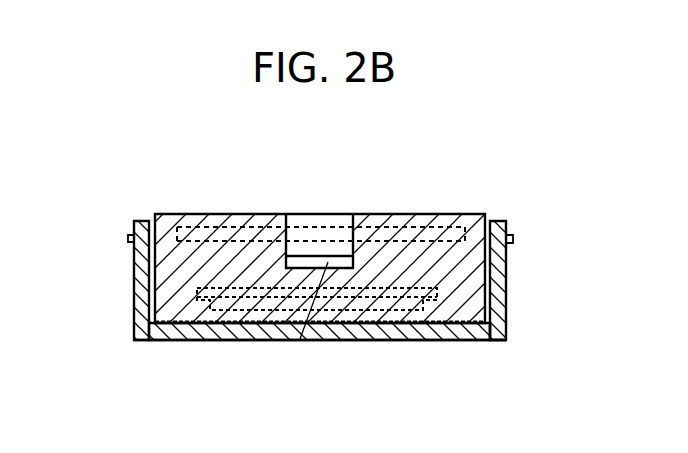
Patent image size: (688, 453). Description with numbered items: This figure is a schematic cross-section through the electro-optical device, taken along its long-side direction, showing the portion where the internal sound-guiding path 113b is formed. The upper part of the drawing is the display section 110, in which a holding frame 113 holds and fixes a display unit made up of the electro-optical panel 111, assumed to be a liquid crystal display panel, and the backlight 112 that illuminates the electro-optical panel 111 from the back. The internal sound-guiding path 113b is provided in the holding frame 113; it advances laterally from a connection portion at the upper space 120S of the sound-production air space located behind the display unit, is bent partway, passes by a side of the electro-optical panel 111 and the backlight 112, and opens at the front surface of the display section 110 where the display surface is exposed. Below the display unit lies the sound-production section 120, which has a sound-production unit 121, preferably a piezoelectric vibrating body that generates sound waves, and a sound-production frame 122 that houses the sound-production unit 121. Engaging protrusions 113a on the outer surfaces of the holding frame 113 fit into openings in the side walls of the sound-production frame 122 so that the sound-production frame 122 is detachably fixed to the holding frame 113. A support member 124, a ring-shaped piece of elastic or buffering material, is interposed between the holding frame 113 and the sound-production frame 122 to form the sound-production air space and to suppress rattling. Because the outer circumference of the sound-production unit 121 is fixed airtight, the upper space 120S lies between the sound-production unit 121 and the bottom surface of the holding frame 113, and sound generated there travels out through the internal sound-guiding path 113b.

The display section 110 is at (442, 201).
The electro-optical panel 111 is at (255, 212).
The backlight 112 is at (372, 214).
The holding frame 113 is at (167, 212).
The engaging protrusion 113a is at (128, 238).
The internal sound-guiding path 113b is at (322, 232).
The sound-production section 120 is at (382, 345).
The upper space 120S is at (300, 340).
The sound-production unit 121 is at (160, 302).
The sound-production frame 122 is at (497, 339).
The support member 124 is at (170, 341).